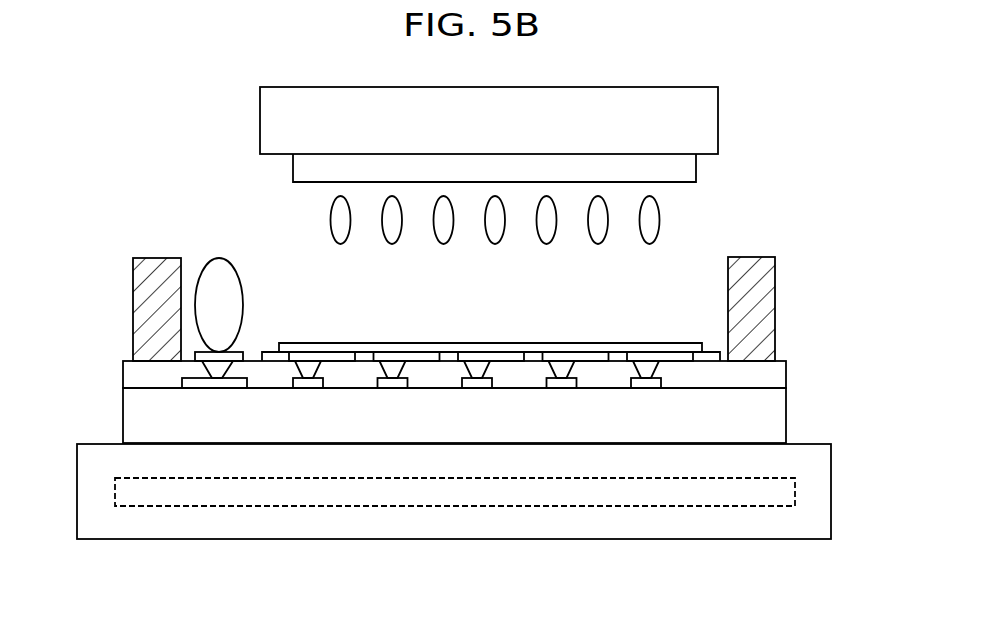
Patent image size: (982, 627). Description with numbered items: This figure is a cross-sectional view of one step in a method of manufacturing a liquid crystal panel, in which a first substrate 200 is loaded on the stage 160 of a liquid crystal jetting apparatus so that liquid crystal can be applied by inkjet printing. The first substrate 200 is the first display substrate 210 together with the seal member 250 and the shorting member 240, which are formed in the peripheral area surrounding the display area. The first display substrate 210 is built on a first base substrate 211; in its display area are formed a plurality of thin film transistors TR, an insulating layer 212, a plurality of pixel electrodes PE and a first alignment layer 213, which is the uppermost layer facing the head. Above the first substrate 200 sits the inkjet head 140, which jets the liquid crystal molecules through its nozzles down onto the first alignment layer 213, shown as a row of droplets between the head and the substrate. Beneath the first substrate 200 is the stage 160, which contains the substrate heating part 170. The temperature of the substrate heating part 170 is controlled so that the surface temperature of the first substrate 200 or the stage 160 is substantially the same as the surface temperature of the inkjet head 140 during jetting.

The inkjet head 140 is at (712, 121).
The stage 160 is at (542, 522).
The substrate heating part 170 is at (381, 507).
The first substrate 200 is at (475, 350).
The first display substrate 210 is at (452, 368).
The first base substrate 211 is at (782, 417).
The insulating layer 212 is at (782, 376).
The first alignment layer 213 is at (642, 348).
The shorting member 240 is at (228, 311).
The seal member 250 is at (142, 309).
The thin film transistor TR is at (392, 383).
The pixel electrode PE is at (430, 358).